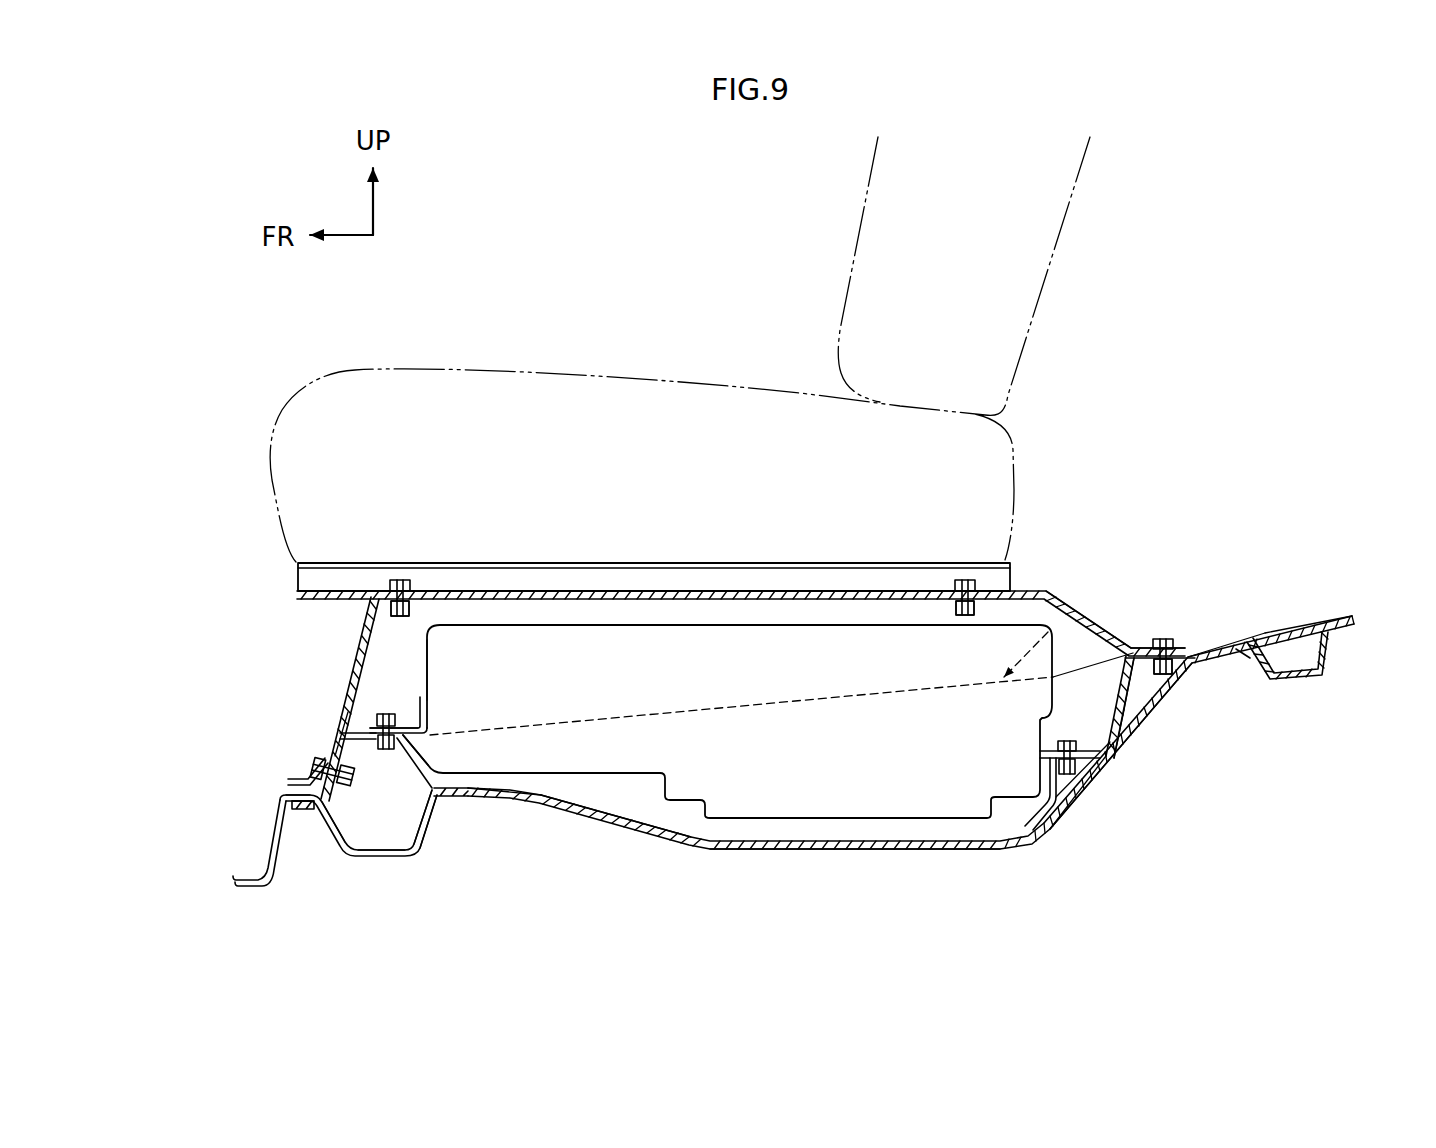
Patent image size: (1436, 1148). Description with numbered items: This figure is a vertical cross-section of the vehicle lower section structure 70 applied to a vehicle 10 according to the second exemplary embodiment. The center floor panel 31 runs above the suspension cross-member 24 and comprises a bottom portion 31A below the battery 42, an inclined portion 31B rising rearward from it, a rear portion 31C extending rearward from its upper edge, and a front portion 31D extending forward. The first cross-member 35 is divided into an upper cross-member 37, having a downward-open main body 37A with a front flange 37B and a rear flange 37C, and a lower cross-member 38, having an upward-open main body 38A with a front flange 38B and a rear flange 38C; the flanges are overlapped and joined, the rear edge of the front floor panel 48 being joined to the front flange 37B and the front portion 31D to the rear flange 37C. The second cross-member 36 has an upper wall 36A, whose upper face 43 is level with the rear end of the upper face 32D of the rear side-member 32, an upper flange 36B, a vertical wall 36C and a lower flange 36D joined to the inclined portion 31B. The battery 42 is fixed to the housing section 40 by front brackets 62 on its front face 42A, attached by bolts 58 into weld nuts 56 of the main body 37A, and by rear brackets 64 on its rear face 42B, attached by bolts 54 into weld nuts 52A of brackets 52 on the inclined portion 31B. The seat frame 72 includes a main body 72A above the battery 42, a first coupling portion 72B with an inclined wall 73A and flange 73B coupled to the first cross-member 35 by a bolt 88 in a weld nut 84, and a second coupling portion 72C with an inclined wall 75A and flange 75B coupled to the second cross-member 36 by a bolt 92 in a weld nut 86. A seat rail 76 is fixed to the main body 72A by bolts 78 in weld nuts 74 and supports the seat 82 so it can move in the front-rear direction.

The vehicle 10 is at (1212, 282).
The suspension cross-member 24 is at (1292, 681).
The center floor panel 31 is at (1299, 620).
The bottom portion 31A is at (828, 851).
The inclined portion 31B is at (1152, 700).
The rear portion 31C is at (1341, 621).
The front portion 31D is at (563, 812).
The rear side-member 32 is at (1087, 660).
The upper face of rear side-member 32D is at (700, 712).
The first cross-member 35 is at (417, 784).
The second cross-member 36 is at (1127, 723).
The upper wall 36A is at (1212, 650).
The upper flange 36B is at (1240, 648).
The vertical wall 36C is at (1118, 690).
The lower flange 36D is at (1113, 742).
The upper cross-member 37 is at (350, 730).
The main body of upper cross-member 37A is at (360, 712).
The front flange of upper cross-member 37B is at (283, 810).
The rear flange of upper cross-member 37C is at (487, 799).
The lower cross-member 38 is at (351, 858).
The main body of lower cross-member 38A is at (380, 858).
The front flange of lower cross-member 38B is at (307, 812).
The rear flange of lower cross-member 38C is at (450, 800).
The housing section 40 is at (430, 766).
The battery 42 is at (759, 822).
The front face of battery 42A is at (424, 660).
The rear face of battery 42B is at (1055, 608).
The upper face of upper wall 43 is at (1243, 640).
The front floor panel 48 is at (270, 835).
The bracket 52 is at (1037, 820).
The weld nut 52A is at (1085, 772).
The bolt 54 is at (1045, 712).
The weld nut 56 is at (372, 740).
The bolt 58 is at (390, 712).
The front bracket 62 is at (423, 697).
The rear bracket 64 is at (1037, 722).
The vehicle lower section structure 70 is at (1167, 604).
The seat frame 72 is at (1050, 598).
The main body of seat frame 72A is at (1040, 590).
The first coupling portion 72B is at (365, 622).
The second coupling portion 72C is at (1140, 647).
The inclined wall 73A is at (338, 735).
The flange 73B is at (288, 782).
The weld nut 74 is at (414, 611).
The inclined wall 75A is at (1128, 655).
The flange 75B is at (1178, 648).
The seat rail 76 is at (735, 561).
The bolt 78 is at (402, 578).
The seat 82 is at (724, 380).
The weld nut 84 is at (352, 824).
The weld nut 86 is at (1180, 665).
The bolt 88 is at (315, 765).
The bolt 92 is at (1163, 638).